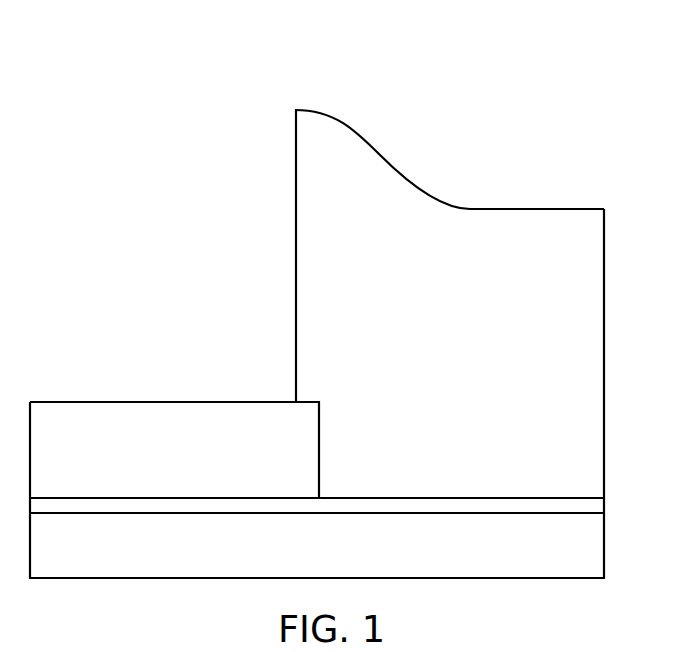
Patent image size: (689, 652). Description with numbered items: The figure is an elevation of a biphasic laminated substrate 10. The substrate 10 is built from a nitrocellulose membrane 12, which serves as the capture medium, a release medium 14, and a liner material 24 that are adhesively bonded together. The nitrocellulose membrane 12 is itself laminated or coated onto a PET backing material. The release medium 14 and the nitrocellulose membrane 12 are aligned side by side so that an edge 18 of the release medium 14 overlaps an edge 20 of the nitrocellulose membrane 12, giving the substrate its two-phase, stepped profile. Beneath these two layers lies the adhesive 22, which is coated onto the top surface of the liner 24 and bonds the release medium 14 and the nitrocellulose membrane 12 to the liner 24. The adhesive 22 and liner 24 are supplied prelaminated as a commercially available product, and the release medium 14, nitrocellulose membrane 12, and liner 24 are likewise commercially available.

The biphasic laminated substrate 10 is at (250, 74).
The nitrocellulose membrane 12 is at (62, 400).
The release medium 14 is at (405, 182).
The edge of the release medium 18 is at (298, 332).
The edge of the nitrocellulose membrane 20 is at (304, 403).
The adhesive 22 is at (607, 502).
The liner material 24 is at (607, 547).